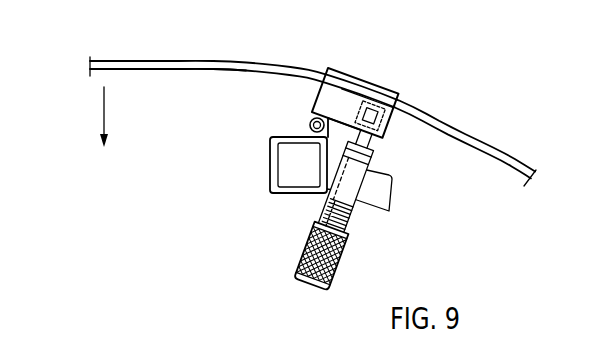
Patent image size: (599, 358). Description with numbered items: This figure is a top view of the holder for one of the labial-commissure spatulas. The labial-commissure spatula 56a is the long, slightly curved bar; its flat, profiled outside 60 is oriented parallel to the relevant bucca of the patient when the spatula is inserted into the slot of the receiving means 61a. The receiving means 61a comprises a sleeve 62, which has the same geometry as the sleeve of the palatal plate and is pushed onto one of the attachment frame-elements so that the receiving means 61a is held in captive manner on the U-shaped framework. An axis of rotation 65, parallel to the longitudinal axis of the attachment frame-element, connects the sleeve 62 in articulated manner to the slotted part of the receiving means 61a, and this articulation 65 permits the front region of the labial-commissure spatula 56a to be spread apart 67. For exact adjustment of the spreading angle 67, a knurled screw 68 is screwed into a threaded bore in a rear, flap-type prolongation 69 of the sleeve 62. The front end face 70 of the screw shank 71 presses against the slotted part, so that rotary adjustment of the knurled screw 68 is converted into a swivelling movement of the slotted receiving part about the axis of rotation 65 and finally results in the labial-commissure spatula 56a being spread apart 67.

The labial-commissure spatula 56a is at (192, 55).
The outside 60 is at (211, 73).
The receiving means 61a is at (387, 74).
The sleeve 62 is at (270, 179).
The axis of rotation 65 is at (310, 118).
The spreading apart 67 is at (102, 106).
The knurled screw 68 is at (294, 253).
The flap-type prolongation 69 is at (379, 187).
The front end face 70 is at (387, 125).
The screw shank 71 is at (353, 212).